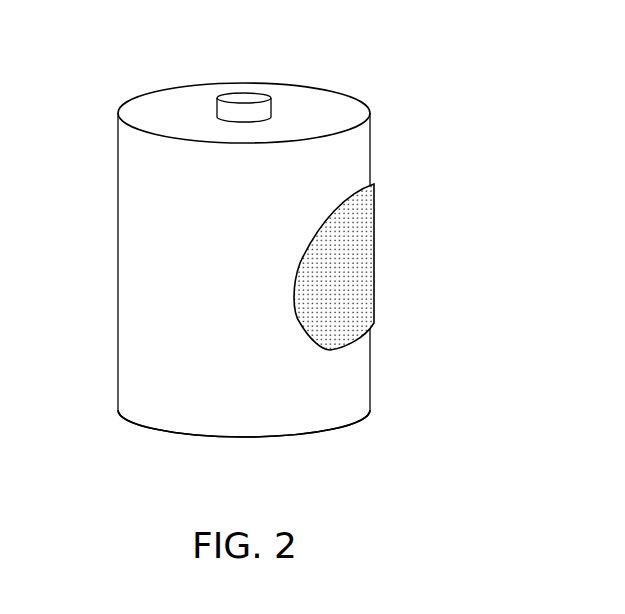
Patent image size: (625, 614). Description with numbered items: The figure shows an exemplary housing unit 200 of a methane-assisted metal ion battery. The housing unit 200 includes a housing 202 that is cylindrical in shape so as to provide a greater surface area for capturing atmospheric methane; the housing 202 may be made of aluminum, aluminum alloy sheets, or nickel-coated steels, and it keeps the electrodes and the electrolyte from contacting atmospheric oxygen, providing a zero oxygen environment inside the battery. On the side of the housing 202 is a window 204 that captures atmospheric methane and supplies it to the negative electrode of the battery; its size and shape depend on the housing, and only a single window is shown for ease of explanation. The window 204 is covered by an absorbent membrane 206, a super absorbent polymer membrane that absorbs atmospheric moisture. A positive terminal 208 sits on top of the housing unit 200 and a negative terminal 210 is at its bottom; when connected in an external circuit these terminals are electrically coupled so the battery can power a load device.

The housing unit 200 is at (429, 52).
The housing 202 is at (152, 261).
The window 204 is at (376, 283).
The absorbent membrane 206 is at (360, 253).
The positive terminal 208 is at (243, 97).
The negative terminal 210 is at (244, 437).